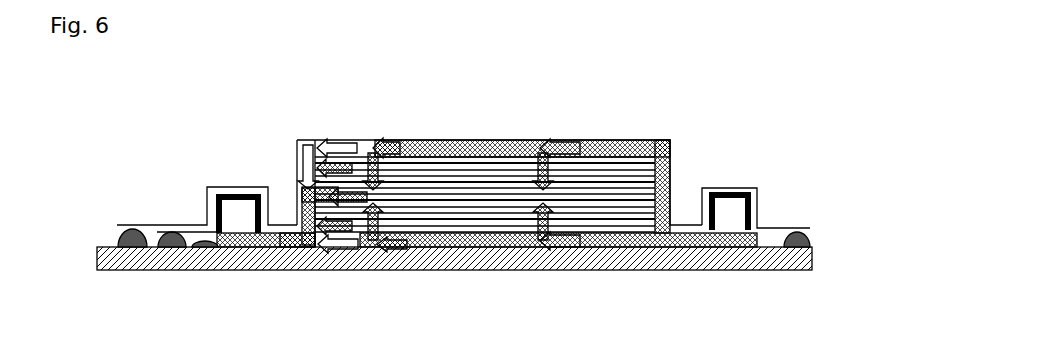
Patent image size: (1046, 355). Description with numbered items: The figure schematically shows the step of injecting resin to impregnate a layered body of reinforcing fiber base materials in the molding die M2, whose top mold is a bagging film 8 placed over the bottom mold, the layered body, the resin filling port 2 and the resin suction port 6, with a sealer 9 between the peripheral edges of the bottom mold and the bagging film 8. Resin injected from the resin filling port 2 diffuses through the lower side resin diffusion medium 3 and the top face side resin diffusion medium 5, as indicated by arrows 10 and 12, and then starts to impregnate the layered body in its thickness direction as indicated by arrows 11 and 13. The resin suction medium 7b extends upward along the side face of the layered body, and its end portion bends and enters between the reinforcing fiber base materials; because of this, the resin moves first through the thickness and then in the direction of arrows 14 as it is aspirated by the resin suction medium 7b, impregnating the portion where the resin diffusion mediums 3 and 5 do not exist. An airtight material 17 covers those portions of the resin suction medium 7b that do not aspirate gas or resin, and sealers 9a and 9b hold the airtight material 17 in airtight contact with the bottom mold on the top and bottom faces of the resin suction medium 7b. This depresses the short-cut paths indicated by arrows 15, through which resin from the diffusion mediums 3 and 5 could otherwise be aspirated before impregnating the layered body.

The resin filling port 2 is at (737, 193).
The resin diffusion medium (bottom) 3 is at (670, 249).
The resin diffusion medium (top) 5 is at (645, 147).
The resin suction port 6 is at (237, 194).
The resin suction medium 7b is at (282, 245).
The bagging film 8 is at (300, 138).
The sealer 9 is at (118, 238).
The sealer 9a is at (162, 247).
The sealer 9b is at (200, 248).
The arrows 10 is at (550, 245).
The arrows 11 is at (540, 240).
The arrows 12 is at (557, 152).
The arrows 13 is at (535, 152).
The arrows 14 is at (338, 226).
The arrows 15 is at (342, 148).
The airtight material 17 is at (192, 226).
The molding die M2 is at (692, 145).